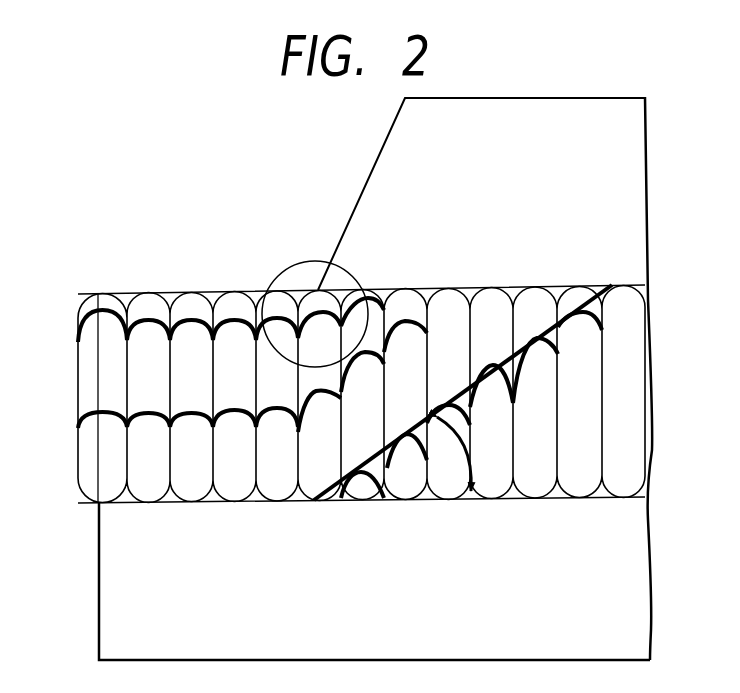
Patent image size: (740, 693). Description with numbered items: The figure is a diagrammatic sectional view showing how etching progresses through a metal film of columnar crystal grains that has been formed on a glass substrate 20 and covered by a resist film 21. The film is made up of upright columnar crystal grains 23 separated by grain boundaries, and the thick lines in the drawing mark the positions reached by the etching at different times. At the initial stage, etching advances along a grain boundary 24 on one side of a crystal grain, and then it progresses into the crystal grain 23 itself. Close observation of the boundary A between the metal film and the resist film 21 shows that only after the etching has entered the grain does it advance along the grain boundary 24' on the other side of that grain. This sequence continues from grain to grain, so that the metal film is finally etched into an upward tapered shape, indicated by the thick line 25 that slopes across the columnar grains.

The glass substrate 20 is at (115, 582).
The resist film 21 is at (393, 170).
The crystal grains 23 is at (146, 324).
The grain boundary 24 is at (340, 334).
The grain boundary 24' is at (364, 360).
The thick line 25 is at (542, 337).
The boundary A is at (290, 268).